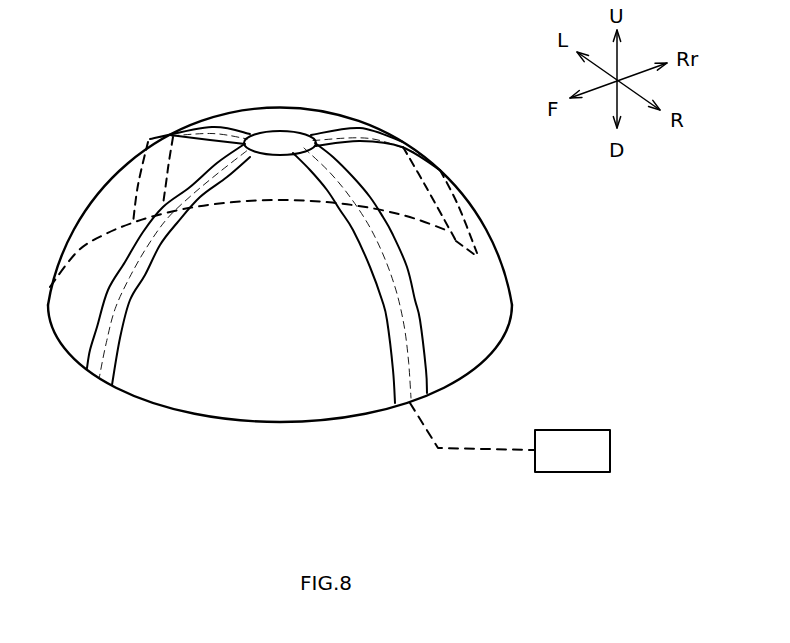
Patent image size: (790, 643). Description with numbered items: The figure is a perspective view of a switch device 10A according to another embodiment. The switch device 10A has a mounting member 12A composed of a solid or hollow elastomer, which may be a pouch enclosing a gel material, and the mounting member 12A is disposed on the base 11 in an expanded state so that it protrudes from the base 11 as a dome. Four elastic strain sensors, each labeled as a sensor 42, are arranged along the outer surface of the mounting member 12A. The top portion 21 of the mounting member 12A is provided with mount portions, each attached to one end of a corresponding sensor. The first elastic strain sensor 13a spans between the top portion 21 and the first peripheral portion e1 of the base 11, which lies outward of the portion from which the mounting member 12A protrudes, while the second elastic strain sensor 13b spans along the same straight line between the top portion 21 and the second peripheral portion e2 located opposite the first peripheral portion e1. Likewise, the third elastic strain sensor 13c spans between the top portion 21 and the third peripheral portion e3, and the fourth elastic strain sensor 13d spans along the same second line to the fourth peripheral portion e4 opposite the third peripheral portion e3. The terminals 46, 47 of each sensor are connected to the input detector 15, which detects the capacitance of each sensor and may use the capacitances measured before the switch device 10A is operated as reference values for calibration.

The switch device 10A is at (128, 78).
The base 11 is at (475, 337).
The mounting member 12A is at (288, 141).
The top portion 21 is at (280, 157).
The elastic strain sensor 42 is at (218, 110).
The first elastic strain sensor 13a is at (132, 328).
The second elastic strain sensor 13b is at (402, 142).
The third elastic strain sensor 13c is at (148, 139).
The fourth elastic strain sensor 13d is at (382, 317).
The first peripheral portion e1 is at (97, 383).
The second peripheral portion e2 is at (472, 237).
The third peripheral portion e3 is at (133, 222).
The fourth peripheral portion e4 is at (405, 405).
The input detector 15 is at (585, 430).
The terminal 46 is at (487, 464).
The terminal 47 is at (490, 455).